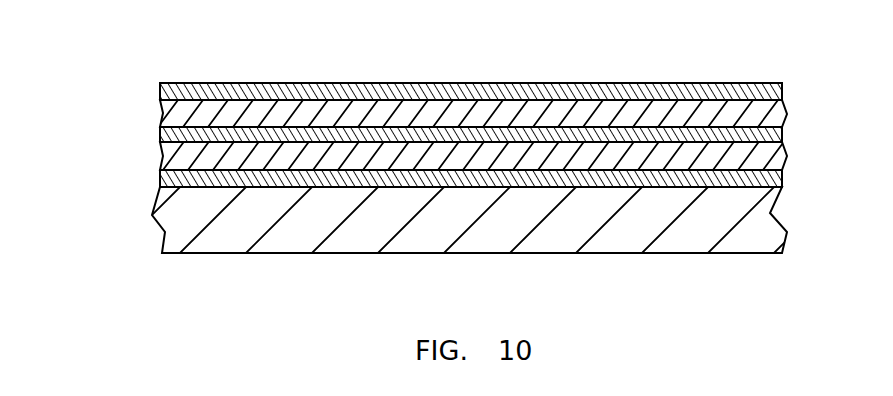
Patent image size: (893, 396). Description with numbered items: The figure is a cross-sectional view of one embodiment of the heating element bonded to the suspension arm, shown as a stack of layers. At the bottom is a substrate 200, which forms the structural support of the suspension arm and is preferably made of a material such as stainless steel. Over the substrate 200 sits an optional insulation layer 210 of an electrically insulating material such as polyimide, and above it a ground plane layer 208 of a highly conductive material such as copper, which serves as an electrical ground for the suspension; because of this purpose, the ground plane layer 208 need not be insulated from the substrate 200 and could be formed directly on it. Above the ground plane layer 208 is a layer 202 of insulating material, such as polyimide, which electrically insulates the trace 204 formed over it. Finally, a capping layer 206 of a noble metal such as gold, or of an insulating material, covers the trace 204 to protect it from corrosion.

The substrate 200 is at (163, 238).
The layer of insulating material 202 is at (160, 131).
The trace 204 is at (160, 107).
The capping layer 206 is at (160, 91).
The ground plane layer 208 is at (160, 157).
The insulation layer 210 is at (160, 183).